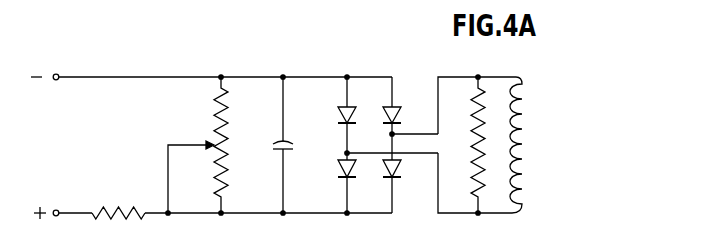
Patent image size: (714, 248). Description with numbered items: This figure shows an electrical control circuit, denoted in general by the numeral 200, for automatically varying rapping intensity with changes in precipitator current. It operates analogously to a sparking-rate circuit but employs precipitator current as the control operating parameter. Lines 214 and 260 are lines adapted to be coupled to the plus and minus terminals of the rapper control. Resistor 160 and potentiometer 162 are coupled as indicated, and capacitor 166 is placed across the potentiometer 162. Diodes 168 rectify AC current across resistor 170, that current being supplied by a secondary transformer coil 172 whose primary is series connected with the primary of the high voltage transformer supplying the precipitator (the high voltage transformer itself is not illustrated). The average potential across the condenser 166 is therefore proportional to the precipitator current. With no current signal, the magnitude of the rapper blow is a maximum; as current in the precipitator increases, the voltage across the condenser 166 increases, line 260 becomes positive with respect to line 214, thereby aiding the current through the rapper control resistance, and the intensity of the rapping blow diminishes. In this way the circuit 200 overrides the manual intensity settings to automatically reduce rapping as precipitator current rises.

The circuit 200 is at (257, 62).
The line 214 is at (84, 78).
The line 260 is at (72, 211).
The resistor 160 is at (130, 209).
The potentiometer 162 is at (230, 118).
The capacitor 166 is at (286, 152).
The diodes 168 is at (352, 116).
The resistor 170 is at (472, 190).
The secondary transformer coil 172 is at (528, 190).